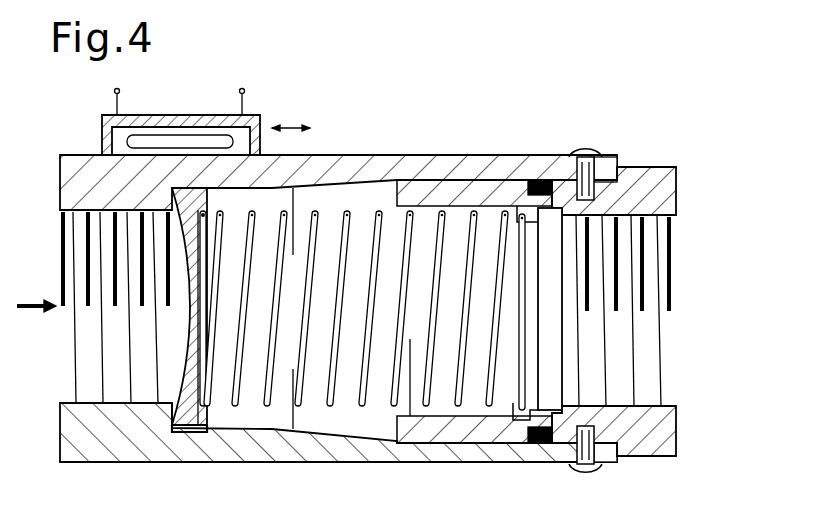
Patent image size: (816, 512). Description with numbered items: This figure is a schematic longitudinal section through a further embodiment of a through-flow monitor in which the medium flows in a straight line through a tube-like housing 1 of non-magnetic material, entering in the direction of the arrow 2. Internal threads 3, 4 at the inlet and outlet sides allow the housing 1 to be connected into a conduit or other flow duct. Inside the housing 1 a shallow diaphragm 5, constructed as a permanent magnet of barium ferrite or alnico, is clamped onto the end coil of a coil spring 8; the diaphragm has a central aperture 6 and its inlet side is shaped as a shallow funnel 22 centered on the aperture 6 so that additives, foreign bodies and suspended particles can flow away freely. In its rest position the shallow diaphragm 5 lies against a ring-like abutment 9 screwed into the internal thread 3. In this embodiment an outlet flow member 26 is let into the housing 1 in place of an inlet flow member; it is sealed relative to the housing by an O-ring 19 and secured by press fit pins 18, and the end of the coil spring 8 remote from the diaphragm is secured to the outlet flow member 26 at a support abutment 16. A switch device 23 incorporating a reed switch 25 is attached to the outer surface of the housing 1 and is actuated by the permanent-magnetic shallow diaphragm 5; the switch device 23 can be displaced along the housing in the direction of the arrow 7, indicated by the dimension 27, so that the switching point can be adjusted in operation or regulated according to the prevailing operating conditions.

The housing 1 is at (379, 167).
The arrow 2 is at (36, 295).
The internal thread 3 is at (90, 243).
The internal thread 4 is at (651, 242).
The shallow diaphragm 5 is at (192, 255).
The central aperture 6 is at (193, 308).
The arrow 7 is at (188, 424).
The coil spring 8 is at (352, 215).
The ring-like abutment 9 is at (170, 413).
The support abutment 16 is at (530, 410).
The press fit pins 18 is at (586, 157).
The O-ring 19 is at (535, 182).
The shallow funnel 22 is at (182, 344).
The switch device 23 is at (142, 125).
The reed switch 25 is at (187, 143).
The outlet flow member 26 is at (657, 178).
The displacement range 27 is at (291, 116).